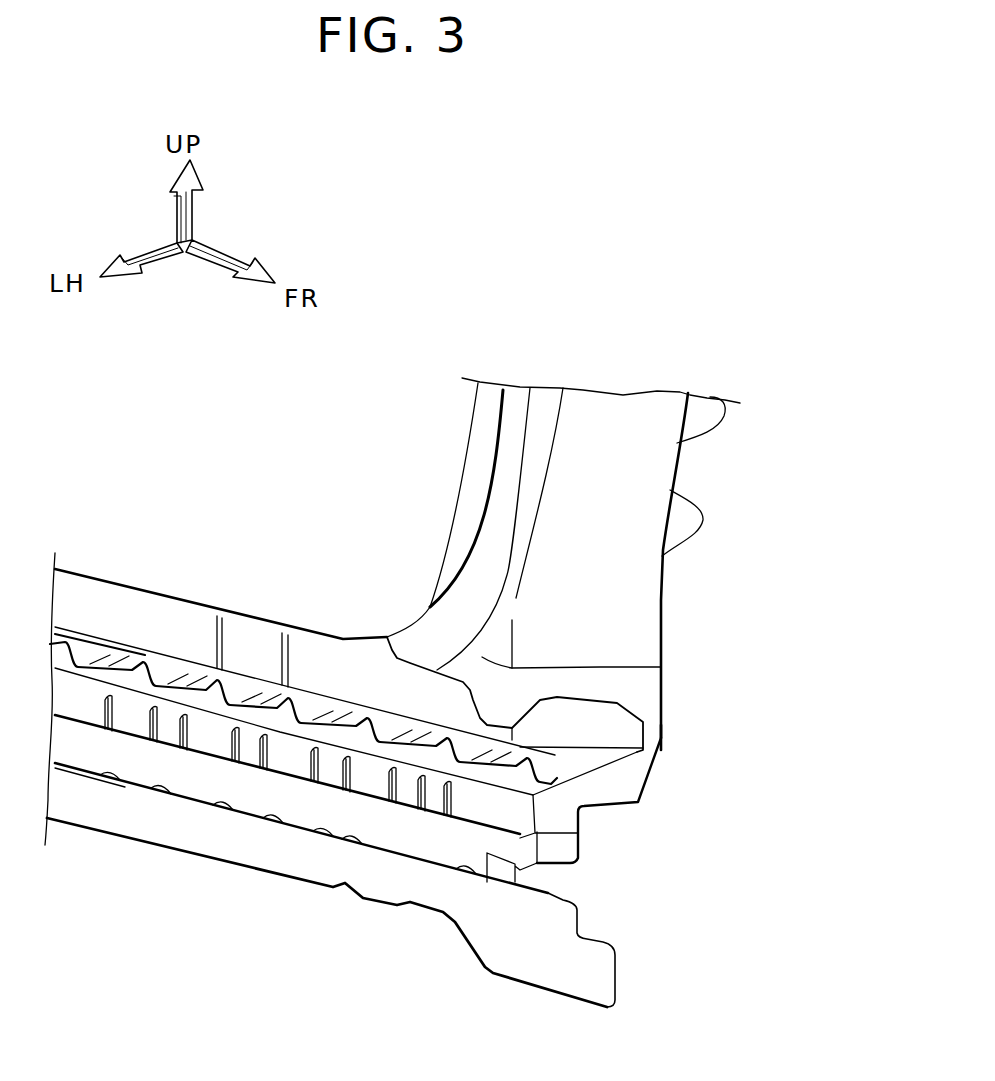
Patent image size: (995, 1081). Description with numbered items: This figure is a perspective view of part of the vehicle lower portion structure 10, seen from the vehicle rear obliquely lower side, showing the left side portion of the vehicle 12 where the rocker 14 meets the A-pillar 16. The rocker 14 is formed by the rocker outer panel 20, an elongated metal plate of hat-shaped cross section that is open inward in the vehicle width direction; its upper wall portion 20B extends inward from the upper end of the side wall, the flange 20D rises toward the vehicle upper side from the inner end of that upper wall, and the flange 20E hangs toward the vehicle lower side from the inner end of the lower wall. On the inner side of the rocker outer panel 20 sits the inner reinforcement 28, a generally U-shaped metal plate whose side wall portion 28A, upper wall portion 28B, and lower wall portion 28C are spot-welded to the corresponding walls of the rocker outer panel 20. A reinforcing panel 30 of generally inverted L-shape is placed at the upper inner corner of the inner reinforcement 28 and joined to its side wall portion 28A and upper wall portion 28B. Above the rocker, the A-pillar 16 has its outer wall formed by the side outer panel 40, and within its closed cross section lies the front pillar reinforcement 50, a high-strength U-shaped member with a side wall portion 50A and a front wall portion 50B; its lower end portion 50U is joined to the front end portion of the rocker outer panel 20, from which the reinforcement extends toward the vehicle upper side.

The vehicle lower portion structure 10 is at (322, 516).
The vehicle 12 is at (112, 872).
The rocker 14 is at (100, 563).
The A-pillar 16 is at (455, 444).
The rocker outer panel 20 is at (152, 593).
The upper wall portion 20B is at (580, 758).
The flange 20D is at (178, 633).
The flange 20E is at (178, 835).
The inner reinforcement 28 is at (330, 690).
The side wall portion 28A is at (297, 803).
The upper wall portion 28B is at (250, 690).
The lower wall portion 28C is at (362, 834).
The reinforcing panel 30 is at (255, 771).
The side outer panel 40 is at (690, 504).
The front pillar reinforcement 50 is at (665, 603).
The side wall portion 50A is at (661, 667).
The front wall portion 50B is at (620, 634).
The lower end portion 50U is at (667, 737).